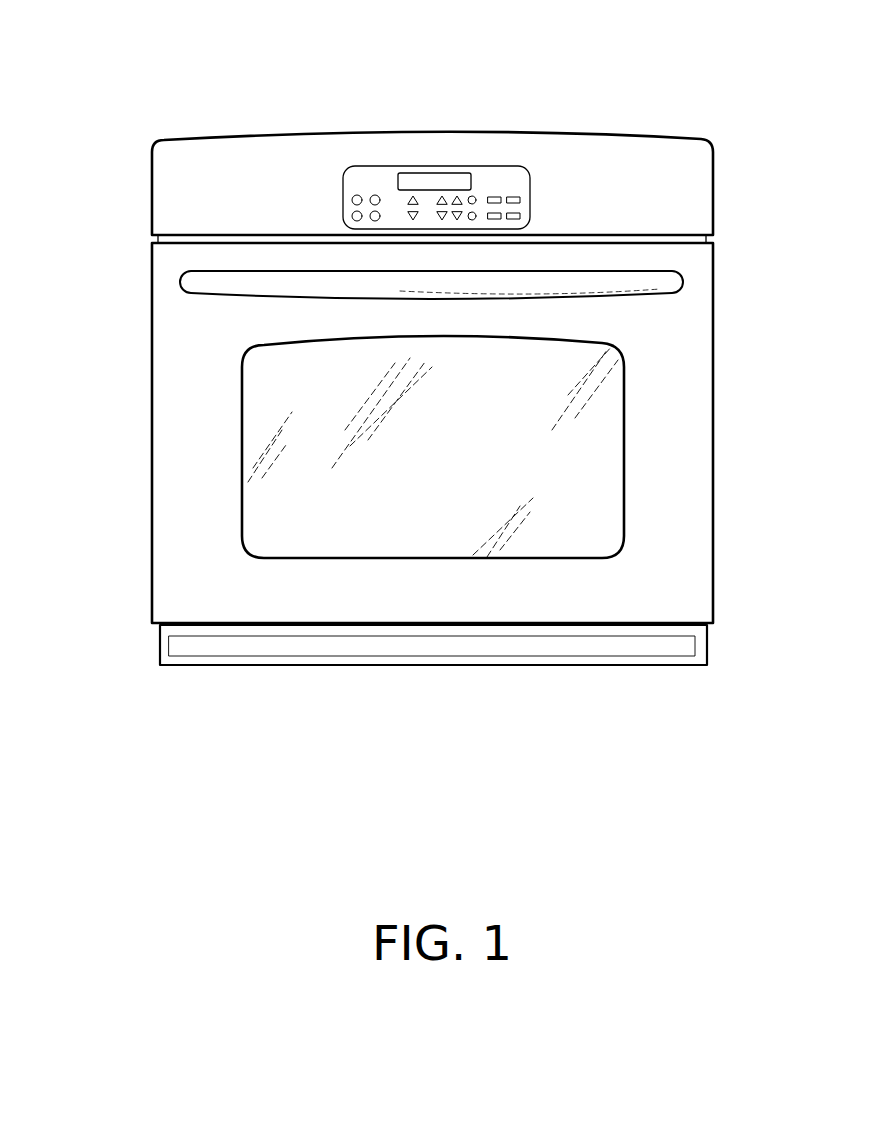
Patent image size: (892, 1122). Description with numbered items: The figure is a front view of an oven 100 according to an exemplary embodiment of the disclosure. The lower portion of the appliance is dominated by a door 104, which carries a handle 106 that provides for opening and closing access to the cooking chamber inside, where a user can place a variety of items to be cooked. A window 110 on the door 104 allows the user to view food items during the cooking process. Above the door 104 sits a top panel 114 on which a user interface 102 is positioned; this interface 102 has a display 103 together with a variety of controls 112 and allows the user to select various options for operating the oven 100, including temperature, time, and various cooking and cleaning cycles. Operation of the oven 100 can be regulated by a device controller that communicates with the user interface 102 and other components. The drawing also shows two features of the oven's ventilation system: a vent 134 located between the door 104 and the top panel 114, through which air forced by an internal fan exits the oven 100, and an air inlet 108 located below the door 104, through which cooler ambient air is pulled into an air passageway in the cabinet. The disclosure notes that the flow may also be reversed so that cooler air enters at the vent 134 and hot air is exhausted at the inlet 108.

The oven 100 is at (215, 79).
The user interface 102 is at (503, 182).
The display 103 is at (433, 182).
The door 104 is at (677, 380).
The handle 106 is at (663, 282).
The air inlet 108 is at (637, 643).
The window 110 is at (608, 462).
The controls 112 is at (353, 200).
The top panel 114 is at (643, 160).
The vent 134 is at (136, 239).